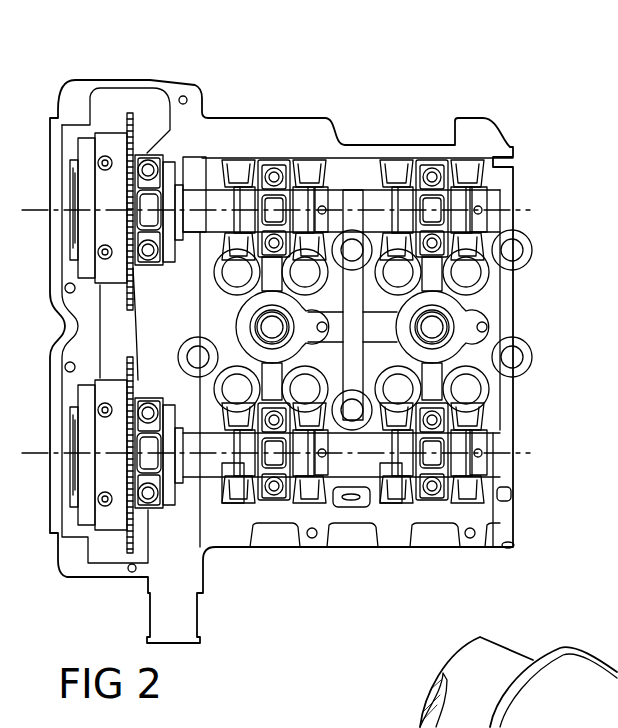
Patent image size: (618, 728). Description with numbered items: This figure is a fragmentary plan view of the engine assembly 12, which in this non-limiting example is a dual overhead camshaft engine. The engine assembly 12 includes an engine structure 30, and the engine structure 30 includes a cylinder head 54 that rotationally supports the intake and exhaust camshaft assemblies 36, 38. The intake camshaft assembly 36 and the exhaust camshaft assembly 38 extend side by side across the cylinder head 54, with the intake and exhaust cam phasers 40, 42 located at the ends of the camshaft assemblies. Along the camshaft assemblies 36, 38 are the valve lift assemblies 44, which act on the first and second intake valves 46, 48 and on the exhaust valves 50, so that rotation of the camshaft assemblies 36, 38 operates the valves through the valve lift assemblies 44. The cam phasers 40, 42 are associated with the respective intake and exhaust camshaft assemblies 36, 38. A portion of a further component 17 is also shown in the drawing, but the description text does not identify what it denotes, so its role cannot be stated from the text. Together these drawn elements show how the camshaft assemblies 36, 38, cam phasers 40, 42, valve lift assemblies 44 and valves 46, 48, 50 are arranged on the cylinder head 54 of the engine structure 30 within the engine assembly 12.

The engine assembly 12 is at (520, 133).
The crankshaft 17 is at (580, 653).
The engine structure 30 is at (287, 118).
The intake camshaft assembly 36 is at (510, 430).
The exhaust camshaft assembly 38 is at (515, 182).
The intake cam phaser 40 is at (110, 530).
The exhaust cam phaser 42 is at (114, 135).
The valve lift assemblies 44 is at (283, 235).
The first intake valve 46 is at (233, 415).
The second intake valve 48 is at (336, 500).
The exhaust valves 50 is at (213, 230).
The cylinder head 54 is at (233, 118).